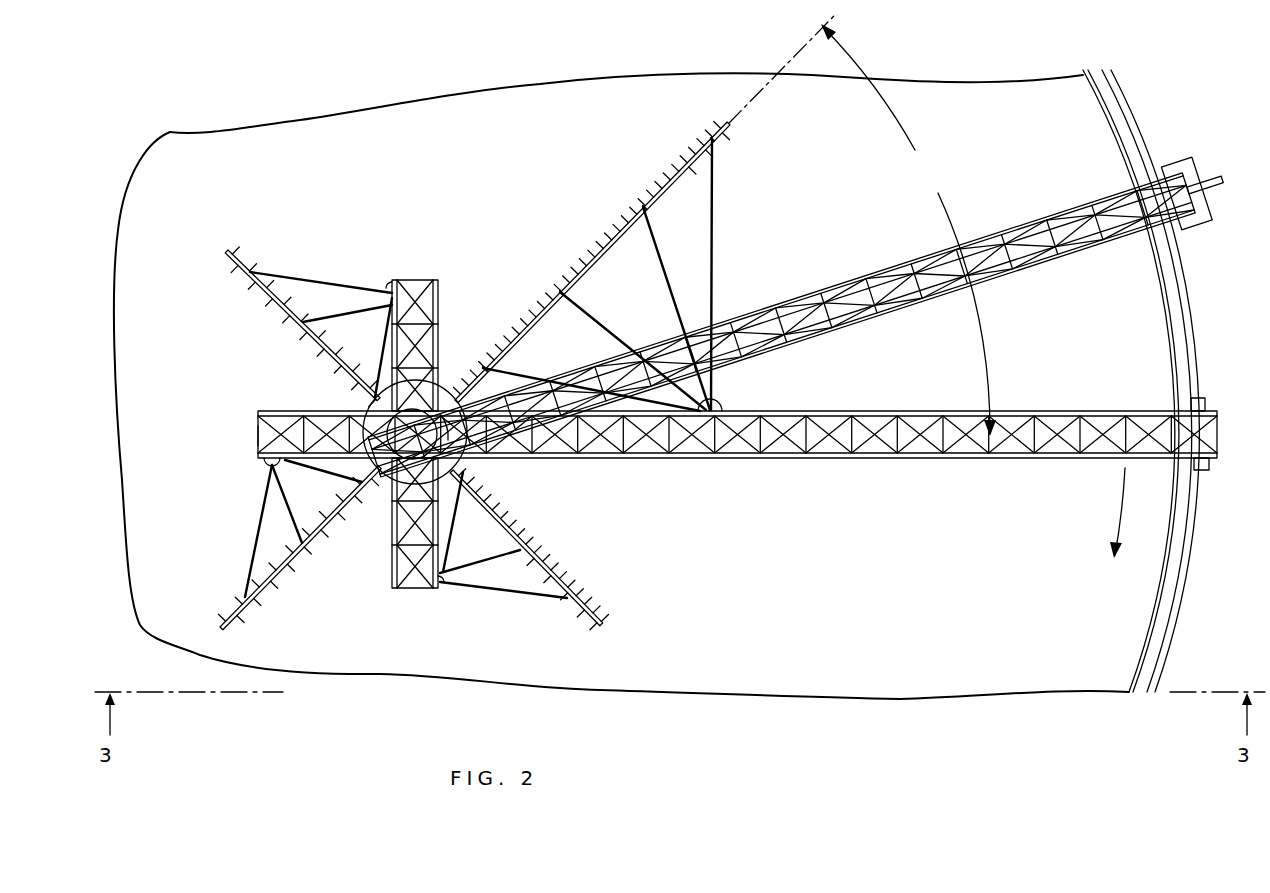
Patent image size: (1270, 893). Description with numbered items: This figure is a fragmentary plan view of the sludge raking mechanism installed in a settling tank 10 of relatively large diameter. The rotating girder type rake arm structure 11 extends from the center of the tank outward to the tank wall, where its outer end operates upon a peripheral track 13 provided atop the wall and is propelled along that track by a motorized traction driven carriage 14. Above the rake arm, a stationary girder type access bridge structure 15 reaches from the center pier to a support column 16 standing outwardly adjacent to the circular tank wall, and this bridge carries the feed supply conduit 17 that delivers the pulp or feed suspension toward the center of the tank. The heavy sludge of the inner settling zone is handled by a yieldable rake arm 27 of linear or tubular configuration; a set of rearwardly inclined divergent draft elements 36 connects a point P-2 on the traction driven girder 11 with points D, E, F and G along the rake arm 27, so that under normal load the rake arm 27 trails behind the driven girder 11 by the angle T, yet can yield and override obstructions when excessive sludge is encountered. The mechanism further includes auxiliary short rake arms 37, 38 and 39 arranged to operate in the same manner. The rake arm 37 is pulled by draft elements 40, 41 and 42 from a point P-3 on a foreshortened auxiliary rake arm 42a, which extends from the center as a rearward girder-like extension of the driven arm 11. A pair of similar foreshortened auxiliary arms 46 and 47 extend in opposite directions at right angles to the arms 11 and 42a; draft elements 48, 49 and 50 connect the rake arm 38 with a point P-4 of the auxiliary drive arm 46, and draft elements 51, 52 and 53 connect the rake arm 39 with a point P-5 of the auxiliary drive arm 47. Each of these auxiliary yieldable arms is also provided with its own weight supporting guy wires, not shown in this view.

The settling tank 10 is at (806, 674).
The rake arm structure 11 is at (779, 460).
The peripheral track 13 is at (1195, 373).
The traction driven carriage 14 is at (1206, 403).
The access bridge structure 15 is at (812, 286).
The support column 16 is at (1193, 166).
The feed supply conduit 17 is at (1223, 189).
The yieldable rake arm 27 is at (607, 244).
The drag or draft elements 36 is at (666, 288).
The auxiliary short rake arm 37 is at (300, 555).
The auxiliary short rake arm 38 is at (539, 551).
The auxiliary short rake arm 39 is at (306, 334).
The draft element 40 is at (254, 548).
The draft element 41 is at (288, 509).
The draft element 42 is at (331, 476).
The foreshortened auxiliary rake arm 42a is at (258, 440).
The auxiliary drive arm 46 is at (392, 562).
The auxiliary drive arm 47 is at (431, 280).
The draft element 48 is at (494, 593).
The draft element 49 is at (466, 569).
The draft element 50 is at (471, 506).
The draft element 51 is at (378, 346).
The draft element 52 is at (348, 320).
The draft element 53 is at (312, 276).
The connection point P-2 is at (722, 406).
The connection point P-3 is at (266, 468).
The connection point P-4 is at (438, 582).
The connection point P-5 is at (391, 290).
The connection point on rake arm D is at (482, 367).
The connection point on rake arm E is at (558, 292).
The connection point on rake arm F is at (643, 207).
The connection point on rake arm G is at (710, 140).
The trailing angle T is at (973, 291).